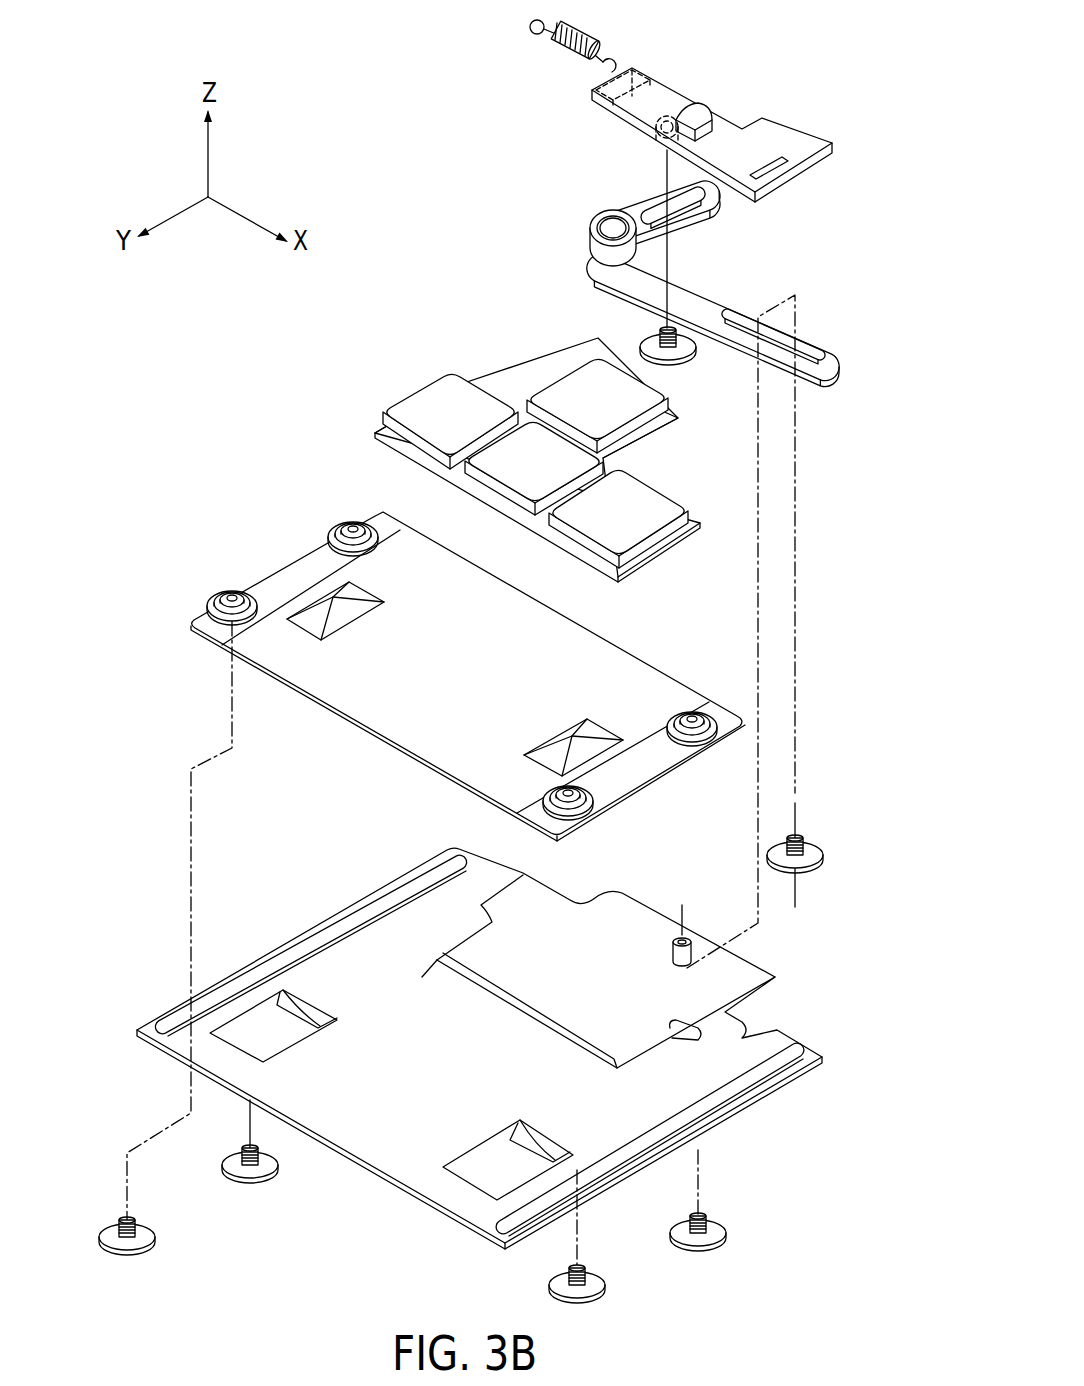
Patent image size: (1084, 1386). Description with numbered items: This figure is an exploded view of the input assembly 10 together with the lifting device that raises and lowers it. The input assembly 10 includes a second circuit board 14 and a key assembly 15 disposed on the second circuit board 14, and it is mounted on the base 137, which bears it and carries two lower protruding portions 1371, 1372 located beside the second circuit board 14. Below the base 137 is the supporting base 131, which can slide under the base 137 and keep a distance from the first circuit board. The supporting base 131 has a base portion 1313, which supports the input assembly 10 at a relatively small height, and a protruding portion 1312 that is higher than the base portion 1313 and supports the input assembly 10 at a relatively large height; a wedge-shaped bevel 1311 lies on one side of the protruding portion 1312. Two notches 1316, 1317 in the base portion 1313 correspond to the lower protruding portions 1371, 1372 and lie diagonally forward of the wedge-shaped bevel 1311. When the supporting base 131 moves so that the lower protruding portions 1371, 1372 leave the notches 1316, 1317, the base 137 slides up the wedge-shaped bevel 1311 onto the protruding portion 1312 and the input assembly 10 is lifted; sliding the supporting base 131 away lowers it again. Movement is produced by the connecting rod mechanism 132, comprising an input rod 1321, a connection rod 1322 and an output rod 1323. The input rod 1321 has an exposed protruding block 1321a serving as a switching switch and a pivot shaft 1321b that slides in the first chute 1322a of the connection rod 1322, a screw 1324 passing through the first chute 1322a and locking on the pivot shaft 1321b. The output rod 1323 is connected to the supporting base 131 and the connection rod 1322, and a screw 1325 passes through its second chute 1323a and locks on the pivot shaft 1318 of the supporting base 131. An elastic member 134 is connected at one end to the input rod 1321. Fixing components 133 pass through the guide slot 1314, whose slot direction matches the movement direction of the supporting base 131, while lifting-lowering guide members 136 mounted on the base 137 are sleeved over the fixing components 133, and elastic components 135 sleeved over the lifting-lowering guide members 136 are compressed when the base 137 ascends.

The input assembly 10 is at (418, 382).
The second circuit board 14 is at (380, 428).
The key assembly 15 is at (472, 395).
The supporting base 131 is at (520, 1044).
The wedge-shaped bevel 1311 is at (590, 1060).
The protruding portion 1312 is at (643, 1023).
The base portion 1313 is at (563, 1078).
The guide slot 1314 is at (353, 925).
The notch 1316 is at (258, 1032).
The notch 1317 is at (483, 1172).
The pivot shaft 1318 is at (670, 947).
The connecting rod mechanism 132 is at (658, 72).
The input rod 1321 is at (690, 129).
The protruding block 1321a is at (698, 108).
The pivot shaft 1321b is at (667, 147).
The connection rod 1322 is at (685, 217).
The first chute 1322a is at (683, 207).
The output rod 1323 is at (746, 312).
The second chute 1323a is at (808, 355).
The screw 1324 is at (677, 355).
The screw 1325 is at (808, 850).
The fixing component 133 is at (237, 1173).
The elastic member 134 is at (583, 30).
The elastic component 135 is at (346, 528).
The lifting-lowering guide member 136 is at (352, 523).
The base 137 is at (449, 649).
The lower protruding portion 1371 is at (346, 619).
The lower protruding portion 1372 is at (567, 753).